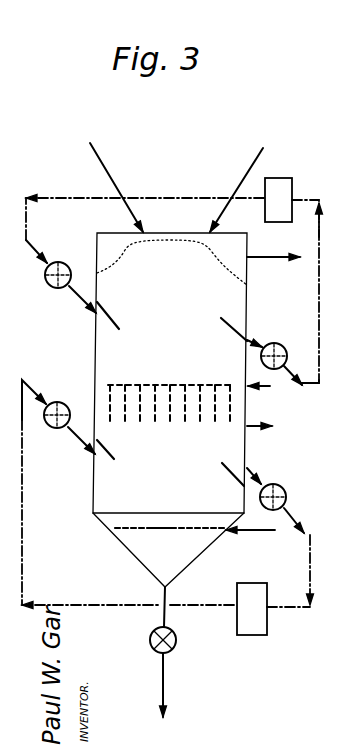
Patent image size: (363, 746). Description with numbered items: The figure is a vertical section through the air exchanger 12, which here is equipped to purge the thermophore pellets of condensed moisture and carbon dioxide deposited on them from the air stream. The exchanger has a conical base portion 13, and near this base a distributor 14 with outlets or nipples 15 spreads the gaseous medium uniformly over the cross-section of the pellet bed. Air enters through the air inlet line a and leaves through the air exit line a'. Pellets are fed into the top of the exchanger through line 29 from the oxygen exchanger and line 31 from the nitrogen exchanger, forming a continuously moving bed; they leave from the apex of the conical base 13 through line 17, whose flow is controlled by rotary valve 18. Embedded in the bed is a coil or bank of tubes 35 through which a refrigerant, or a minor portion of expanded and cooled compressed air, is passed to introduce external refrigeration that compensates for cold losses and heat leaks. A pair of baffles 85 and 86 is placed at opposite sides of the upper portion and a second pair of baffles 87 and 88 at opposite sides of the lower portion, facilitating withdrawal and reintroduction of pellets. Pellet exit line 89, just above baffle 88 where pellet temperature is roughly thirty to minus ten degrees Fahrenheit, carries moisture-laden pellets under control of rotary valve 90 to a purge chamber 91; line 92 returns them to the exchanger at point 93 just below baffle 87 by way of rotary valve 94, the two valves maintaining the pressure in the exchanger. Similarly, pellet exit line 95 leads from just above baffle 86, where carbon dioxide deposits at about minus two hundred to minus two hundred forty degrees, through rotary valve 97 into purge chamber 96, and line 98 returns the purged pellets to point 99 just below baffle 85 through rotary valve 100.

The air exchanger 12 is at (93, 362).
The conical base portion 13 is at (124, 545).
The distributor 14 is at (160, 530).
The outlets or nipples 15 is at (162, 526).
The line 17 is at (168, 691).
The rotary valve 18 is at (178, 644).
The line 29 is at (96, 148).
The line 31 is at (258, 150).
The coil or bank of tubes 35 is at (182, 384).
The baffle 85 is at (120, 320).
The baffle 86 is at (223, 323).
The baffle 87 is at (115, 457).
The baffle 88 is at (229, 475).
The pellet exit line 89 is at (258, 476).
The rotary valve 90 is at (286, 492).
The purge chamber 91 is at (273, 609).
The line 92 is at (129, 514).
The point 93 is at (90, 458).
The rotary valve 94 is at (51, 434).
The pellet exit line 95 is at (258, 336).
The purge chamber 96 is at (294, 280).
The rotary valve 97 is at (288, 350).
The line 98 is at (187, 186).
The point 99 is at (93, 313).
The rotary valve 100 is at (45, 280).
The air inlet line a is at (256, 541).
The air exit line a' is at (273, 271).